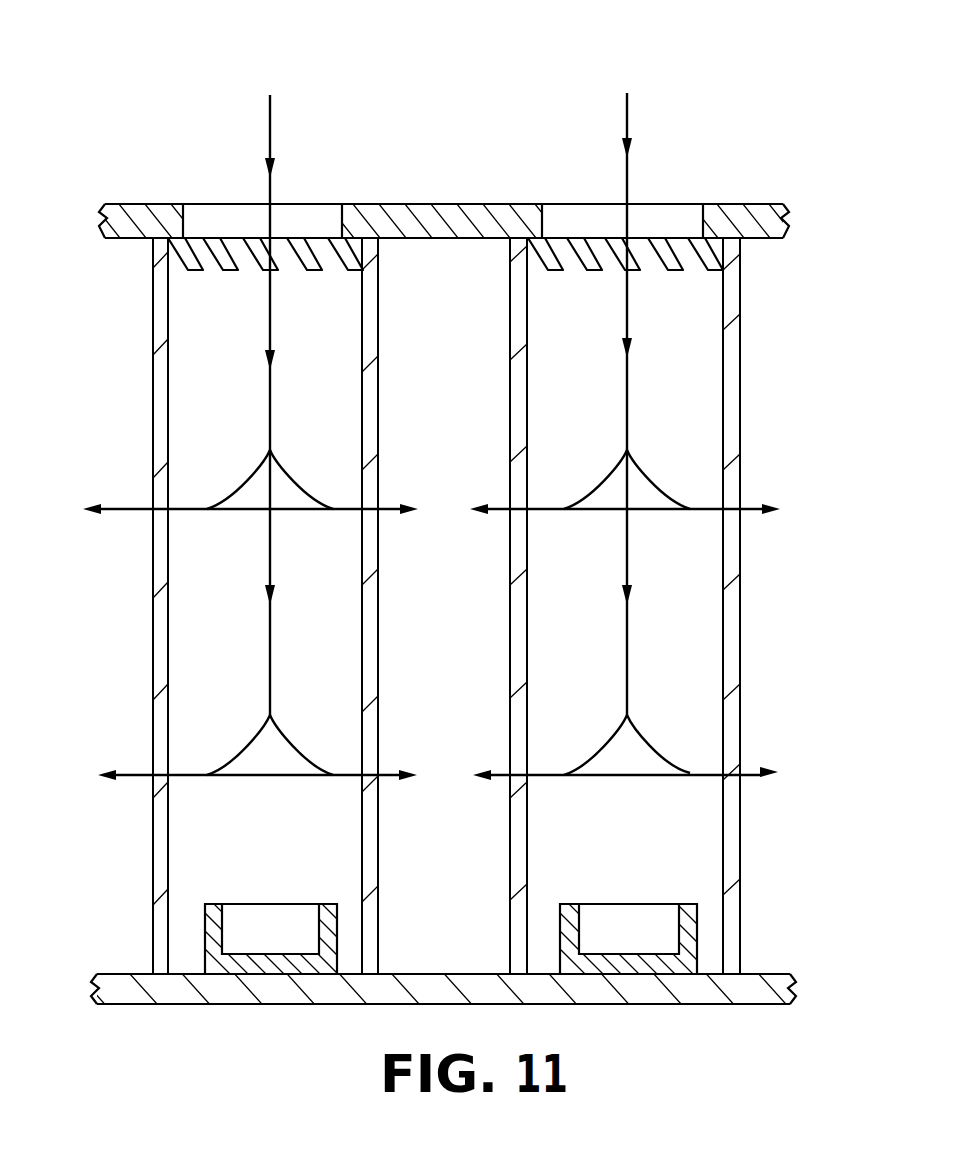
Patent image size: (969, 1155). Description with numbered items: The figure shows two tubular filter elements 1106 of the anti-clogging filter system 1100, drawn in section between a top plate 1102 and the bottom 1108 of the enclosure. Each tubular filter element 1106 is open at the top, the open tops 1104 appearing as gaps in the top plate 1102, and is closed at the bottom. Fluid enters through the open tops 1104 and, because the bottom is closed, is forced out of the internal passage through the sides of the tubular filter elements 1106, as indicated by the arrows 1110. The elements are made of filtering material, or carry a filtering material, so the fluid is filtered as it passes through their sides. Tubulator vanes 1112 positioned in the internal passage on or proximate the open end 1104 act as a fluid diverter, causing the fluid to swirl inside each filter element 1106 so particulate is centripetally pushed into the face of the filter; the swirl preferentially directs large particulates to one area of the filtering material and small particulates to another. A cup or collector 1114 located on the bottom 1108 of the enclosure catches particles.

The anti-clogging filter system 1100 is at (668, 64).
The top plate 1102 is at (447, 205).
The open top 1104 is at (205, 205).
The tubular filter element 1106 is at (153, 343).
The bottom of the enclosure 1108 is at (112, 974).
The arrows 1110 is at (272, 120).
The tubulator vanes 1112 is at (310, 286).
The cup or collector 1114 is at (263, 904).